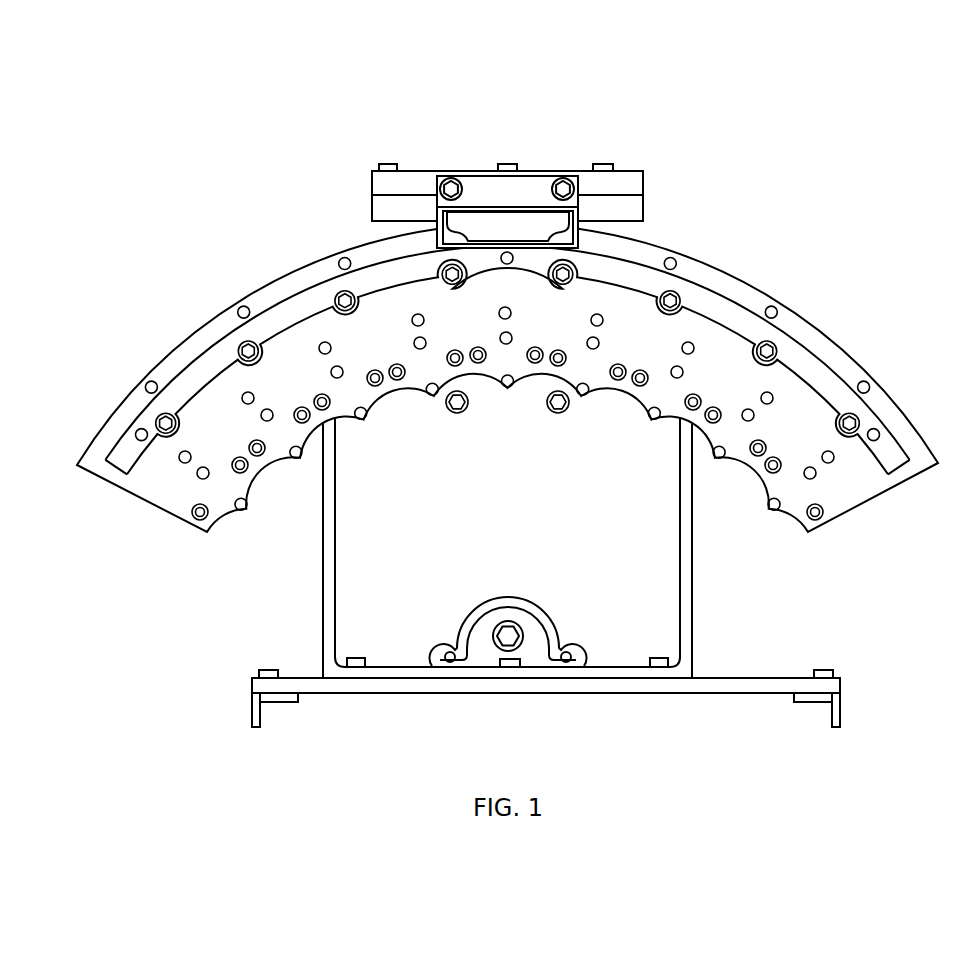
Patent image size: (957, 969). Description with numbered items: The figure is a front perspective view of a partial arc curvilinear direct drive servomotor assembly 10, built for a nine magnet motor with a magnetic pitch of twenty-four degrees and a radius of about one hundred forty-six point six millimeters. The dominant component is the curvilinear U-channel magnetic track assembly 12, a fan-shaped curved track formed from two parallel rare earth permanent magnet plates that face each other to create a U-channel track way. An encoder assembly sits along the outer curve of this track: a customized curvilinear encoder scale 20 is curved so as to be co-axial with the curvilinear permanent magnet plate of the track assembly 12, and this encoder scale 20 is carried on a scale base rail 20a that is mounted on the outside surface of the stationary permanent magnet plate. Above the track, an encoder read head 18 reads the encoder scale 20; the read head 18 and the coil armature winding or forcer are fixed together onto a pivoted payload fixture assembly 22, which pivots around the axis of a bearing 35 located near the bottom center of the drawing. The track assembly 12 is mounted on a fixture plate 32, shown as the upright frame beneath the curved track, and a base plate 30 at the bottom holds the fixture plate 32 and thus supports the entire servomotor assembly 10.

The partial arc curvilinear direct drive servomotor assembly 10 is at (507, 407).
The curvilinear U-channel magnetic track assembly 12 is at (857, 488).
The encoder read head 18 is at (565, 236).
The curvilinear encoder scale 20 is at (512, 351).
The scale base rail 20a is at (800, 362).
The pivoted payload fixture assembly 22 is at (533, 186).
The base plate 30 is at (790, 672).
The fixture plate 32 is at (692, 578).
The bearing 35 is at (533, 657).